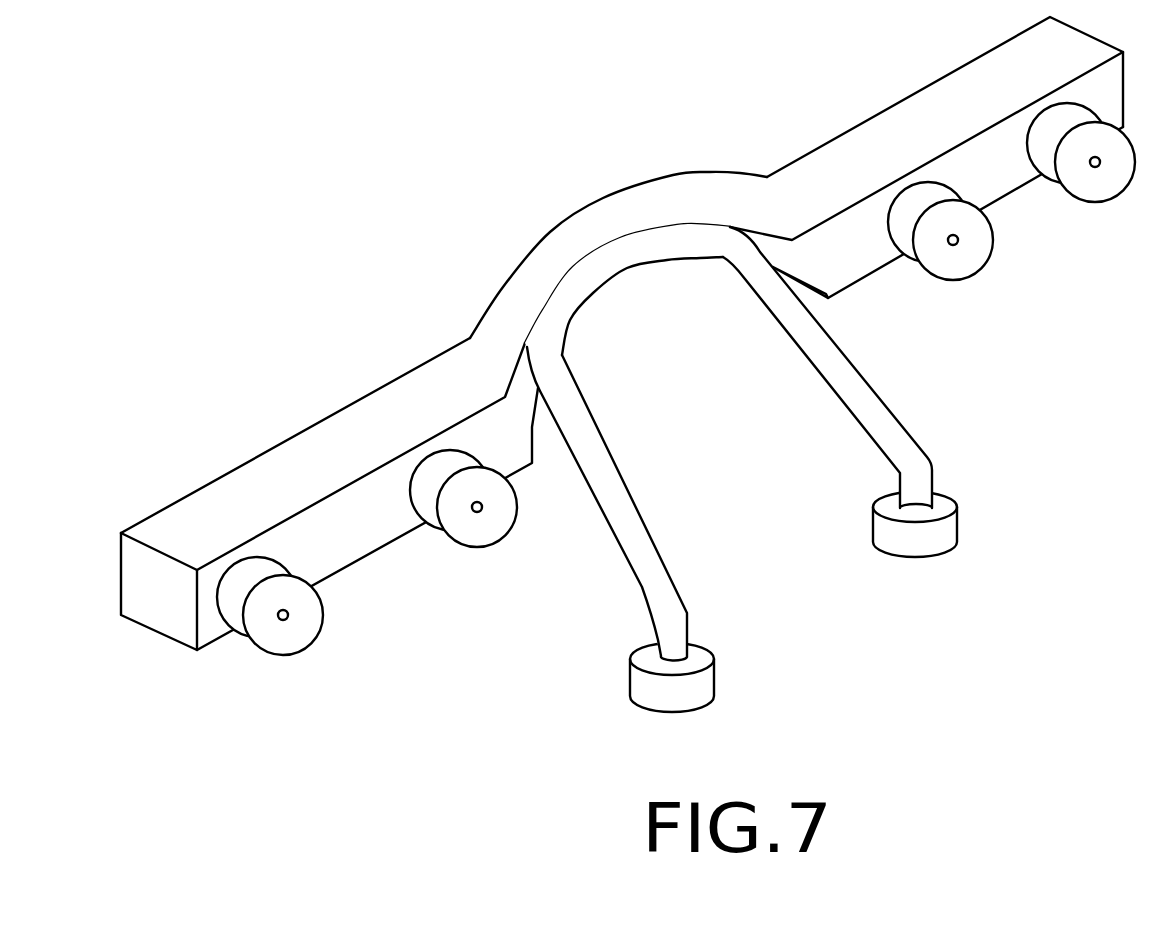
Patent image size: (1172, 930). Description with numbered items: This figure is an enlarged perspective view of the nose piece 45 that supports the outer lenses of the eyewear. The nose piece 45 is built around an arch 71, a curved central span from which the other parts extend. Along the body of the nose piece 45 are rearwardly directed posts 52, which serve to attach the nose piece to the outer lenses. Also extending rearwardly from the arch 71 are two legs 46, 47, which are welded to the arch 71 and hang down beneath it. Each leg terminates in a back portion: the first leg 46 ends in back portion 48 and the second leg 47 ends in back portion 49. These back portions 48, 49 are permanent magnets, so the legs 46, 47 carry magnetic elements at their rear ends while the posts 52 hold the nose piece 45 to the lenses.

The nose piece 45 is at (583, 132).
The leg 46 is at (612, 485).
The leg 47 is at (840, 375).
The back portion 48 is at (695, 683).
The back portion 49 is at (918, 543).
The post 52 is at (283, 642).
The arch 71 is at (677, 200).